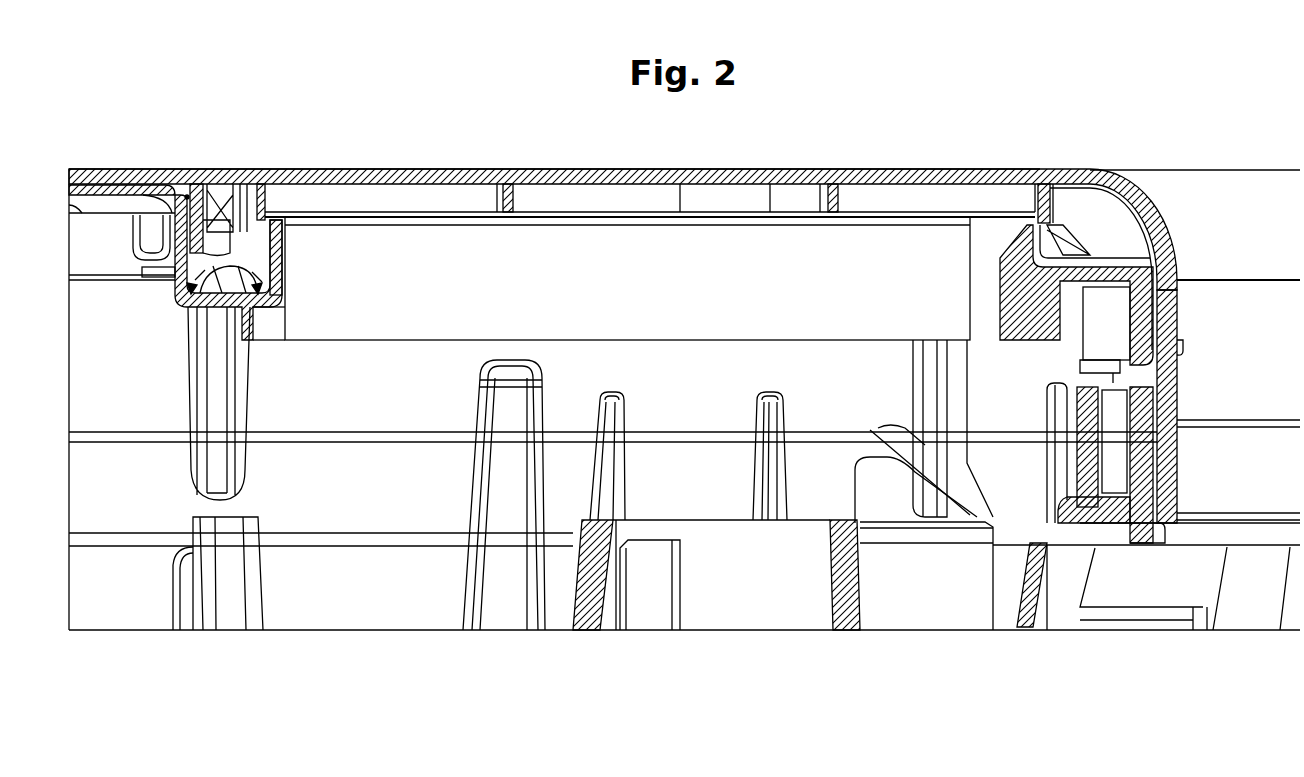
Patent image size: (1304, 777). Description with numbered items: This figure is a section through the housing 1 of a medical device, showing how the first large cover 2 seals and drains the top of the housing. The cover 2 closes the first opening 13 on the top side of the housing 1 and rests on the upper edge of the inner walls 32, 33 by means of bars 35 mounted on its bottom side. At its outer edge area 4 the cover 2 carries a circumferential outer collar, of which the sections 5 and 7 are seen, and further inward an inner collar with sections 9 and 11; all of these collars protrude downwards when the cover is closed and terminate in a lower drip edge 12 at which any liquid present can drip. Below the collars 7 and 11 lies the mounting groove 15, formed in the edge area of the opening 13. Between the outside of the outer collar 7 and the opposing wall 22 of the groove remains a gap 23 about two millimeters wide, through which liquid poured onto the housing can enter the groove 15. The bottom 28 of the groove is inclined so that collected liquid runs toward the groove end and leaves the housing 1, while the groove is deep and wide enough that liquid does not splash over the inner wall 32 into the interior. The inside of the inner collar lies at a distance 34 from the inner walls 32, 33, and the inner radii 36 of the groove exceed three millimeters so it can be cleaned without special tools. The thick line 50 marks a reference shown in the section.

The housing 1 is at (684, 399).
The first large cover 2 is at (800, 180).
The outer edge area 4 is at (221, 185).
The outer collar section 5 is at (1167, 323).
The outer collar section 7 is at (232, 185).
The inner collar section 9 is at (1050, 203).
The inner collar section 11 is at (300, 177).
The lower drip edge 12 is at (260, 185).
The first opening 13 is at (589, 270).
The mounting groove 15 is at (237, 273).
The opposing wall 22 is at (120, 167).
The gap 23 is at (185, 193).
The bottom 28 is at (203, 320).
The inner wall 32 is at (280, 238).
The inner wall 33 is at (993, 260).
The distance 34 is at (263, 220).
The bar 35 is at (512, 200).
The inner radius 36 is at (262, 290).
The sealing line 50 is at (187, 197).